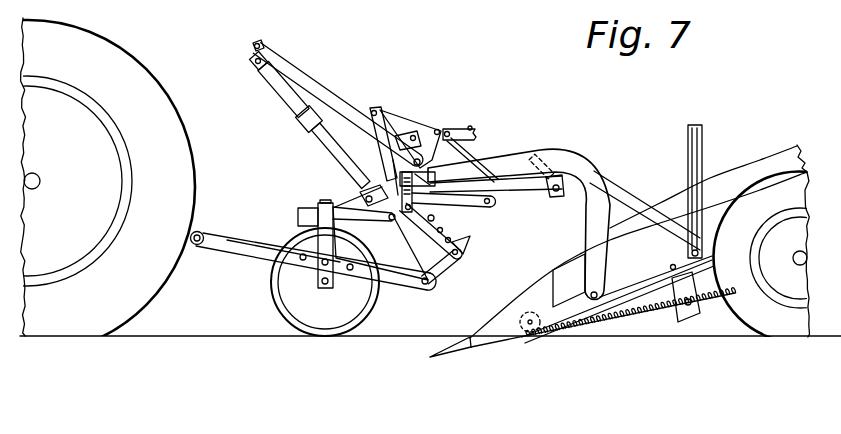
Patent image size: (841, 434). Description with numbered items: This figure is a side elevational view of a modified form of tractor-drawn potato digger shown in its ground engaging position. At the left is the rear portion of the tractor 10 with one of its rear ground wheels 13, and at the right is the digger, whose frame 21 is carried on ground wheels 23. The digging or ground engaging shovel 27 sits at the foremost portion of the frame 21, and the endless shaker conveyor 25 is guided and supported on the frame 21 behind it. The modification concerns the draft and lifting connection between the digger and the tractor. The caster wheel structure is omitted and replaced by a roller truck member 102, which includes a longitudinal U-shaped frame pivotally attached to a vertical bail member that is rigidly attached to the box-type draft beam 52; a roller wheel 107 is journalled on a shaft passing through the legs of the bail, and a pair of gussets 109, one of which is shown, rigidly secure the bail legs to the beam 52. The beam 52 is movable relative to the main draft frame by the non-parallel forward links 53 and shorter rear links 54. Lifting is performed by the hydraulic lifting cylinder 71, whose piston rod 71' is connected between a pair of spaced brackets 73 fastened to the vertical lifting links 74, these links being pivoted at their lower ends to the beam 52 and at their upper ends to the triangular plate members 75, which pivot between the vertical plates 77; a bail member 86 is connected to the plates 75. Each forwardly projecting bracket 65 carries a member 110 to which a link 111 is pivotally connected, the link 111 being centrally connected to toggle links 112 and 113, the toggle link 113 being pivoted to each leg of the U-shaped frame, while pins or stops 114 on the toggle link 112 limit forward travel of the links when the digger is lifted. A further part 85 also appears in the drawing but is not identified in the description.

The tractor 10 is at (145, 42).
The rear ground wheels 13 is at (157, 95).
The roller truck member 102 is at (250, 233).
The roller wheel 107 is at (312, 336).
The gussets 109 is at (370, 226).
The hydraulic lifting cylinder 71 is at (275, 92).
The piston rod 71' is at (316, 156).
The spaced brackets 73 is at (362, 191).
The vertical lifting links 74 is at (385, 157).
The triangular plate members 75 is at (421, 122).
The lug 85 is at (413, 135).
The vertical plates 77 is at (430, 124).
The bail member 86 is at (471, 128).
The member 110 is at (434, 163).
The bracket 65 is at (434, 173).
The rear links 54 is at (553, 172).
The forward links 53 is at (492, 206).
The box-type draft beam 52 is at (537, 196).
The toggle link 112 is at (435, 219).
The link 111 is at (416, 224).
The toggle link 113 is at (450, 262).
The pins or stops 114 is at (466, 248).
The frame 21 is at (641, 273).
The digging shovel 27 is at (479, 341).
The endless shaker conveyor 25 is at (606, 322).
The ground wheels 23 is at (778, 272).